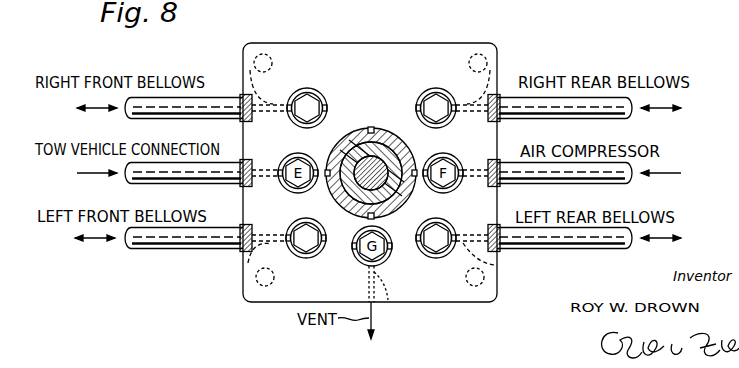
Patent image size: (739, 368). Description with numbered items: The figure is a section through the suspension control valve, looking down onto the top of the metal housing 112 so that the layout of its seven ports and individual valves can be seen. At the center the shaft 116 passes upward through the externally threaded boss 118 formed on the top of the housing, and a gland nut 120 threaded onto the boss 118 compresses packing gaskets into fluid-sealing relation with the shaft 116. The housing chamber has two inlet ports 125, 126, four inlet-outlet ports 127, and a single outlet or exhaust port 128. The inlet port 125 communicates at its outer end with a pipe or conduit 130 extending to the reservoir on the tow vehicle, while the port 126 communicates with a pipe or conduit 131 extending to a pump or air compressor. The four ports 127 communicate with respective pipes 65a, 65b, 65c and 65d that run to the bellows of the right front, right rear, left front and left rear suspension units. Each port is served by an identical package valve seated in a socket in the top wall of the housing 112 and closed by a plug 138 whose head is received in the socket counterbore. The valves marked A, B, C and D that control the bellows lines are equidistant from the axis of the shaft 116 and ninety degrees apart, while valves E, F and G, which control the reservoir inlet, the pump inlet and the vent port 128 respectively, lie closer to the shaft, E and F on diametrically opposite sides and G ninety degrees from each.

The metal housing 112 is at (440, 293).
The shaft 116 is at (404, 203).
The externally threaded boss 118 is at (347, 157).
The gland nut 120 is at (352, 129).
The inlet port 125 is at (246, 194).
The inlet port 126 is at (497, 195).
The inlet-outlet ports 127 is at (250, 72).
The outlet or exhaust port 128 is at (388, 300).
The pipe or conduit 130 is at (166, 183).
The pipe or conduit 131 is at (590, 181).
The plug 138 is at (304, 90).
The pipe 65a is at (148, 250).
The pipe 65b is at (148, 118).
The pipe 65c is at (555, 250).
The pipe 65d is at (556, 118).